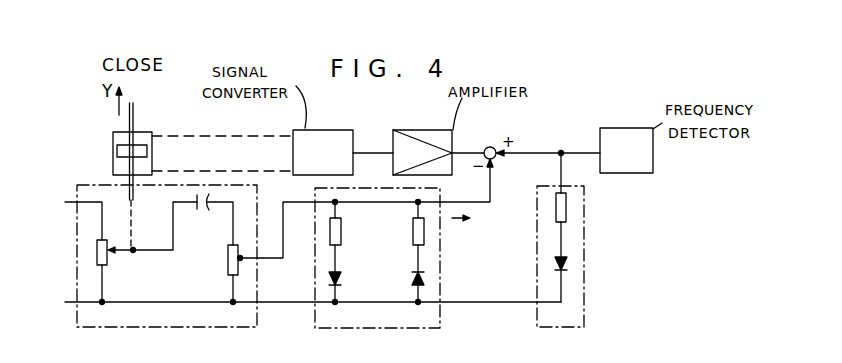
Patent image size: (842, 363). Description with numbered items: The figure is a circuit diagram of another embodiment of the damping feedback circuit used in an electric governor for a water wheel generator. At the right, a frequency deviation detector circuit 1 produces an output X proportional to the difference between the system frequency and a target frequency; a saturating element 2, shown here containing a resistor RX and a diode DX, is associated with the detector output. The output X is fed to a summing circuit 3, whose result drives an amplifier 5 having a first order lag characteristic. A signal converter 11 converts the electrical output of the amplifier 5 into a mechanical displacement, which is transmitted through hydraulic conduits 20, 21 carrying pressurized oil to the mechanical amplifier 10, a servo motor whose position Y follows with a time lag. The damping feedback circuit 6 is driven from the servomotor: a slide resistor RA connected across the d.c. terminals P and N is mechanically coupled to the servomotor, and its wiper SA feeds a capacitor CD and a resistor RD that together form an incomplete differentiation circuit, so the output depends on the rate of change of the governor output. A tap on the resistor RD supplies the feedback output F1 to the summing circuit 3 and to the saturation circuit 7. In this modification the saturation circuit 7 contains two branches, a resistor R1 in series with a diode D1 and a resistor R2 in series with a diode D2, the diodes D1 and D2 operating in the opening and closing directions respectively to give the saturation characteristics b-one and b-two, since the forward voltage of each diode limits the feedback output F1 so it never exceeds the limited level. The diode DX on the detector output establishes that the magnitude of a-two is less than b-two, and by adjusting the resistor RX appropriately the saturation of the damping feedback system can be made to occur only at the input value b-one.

The frequency deviation detector circuit 1 is at (628, 128).
The element with saturation 2 is at (577, 257).
The summing circuit 3 is at (490, 147).
The amplifier 5 is at (427, 129).
The damping feedback circuit 6 is at (149, 273).
The saturation circuit 7 is at (377, 274).
The mechanical amplifier apparatus 10 is at (141, 132).
The signal converter 11 is at (322, 129).
The hydraulic conduit 20 is at (218, 114).
The hydraulic conduit 21 is at (224, 152).
The detector output X is at (560, 152).
The resistor RX is at (567, 208).
The diode DX is at (567, 263).
The resistor R1 is at (408, 224).
The resistor R2 is at (348, 224).
The diode D1 is at (408, 280).
The diode D2 is at (349, 280).
The damping feedback output F1 is at (473, 223).
The slide resistor RA is at (114, 270).
The wiper SA is at (124, 264).
The capacitor CD is at (199, 215).
The resistor RD is at (214, 260).